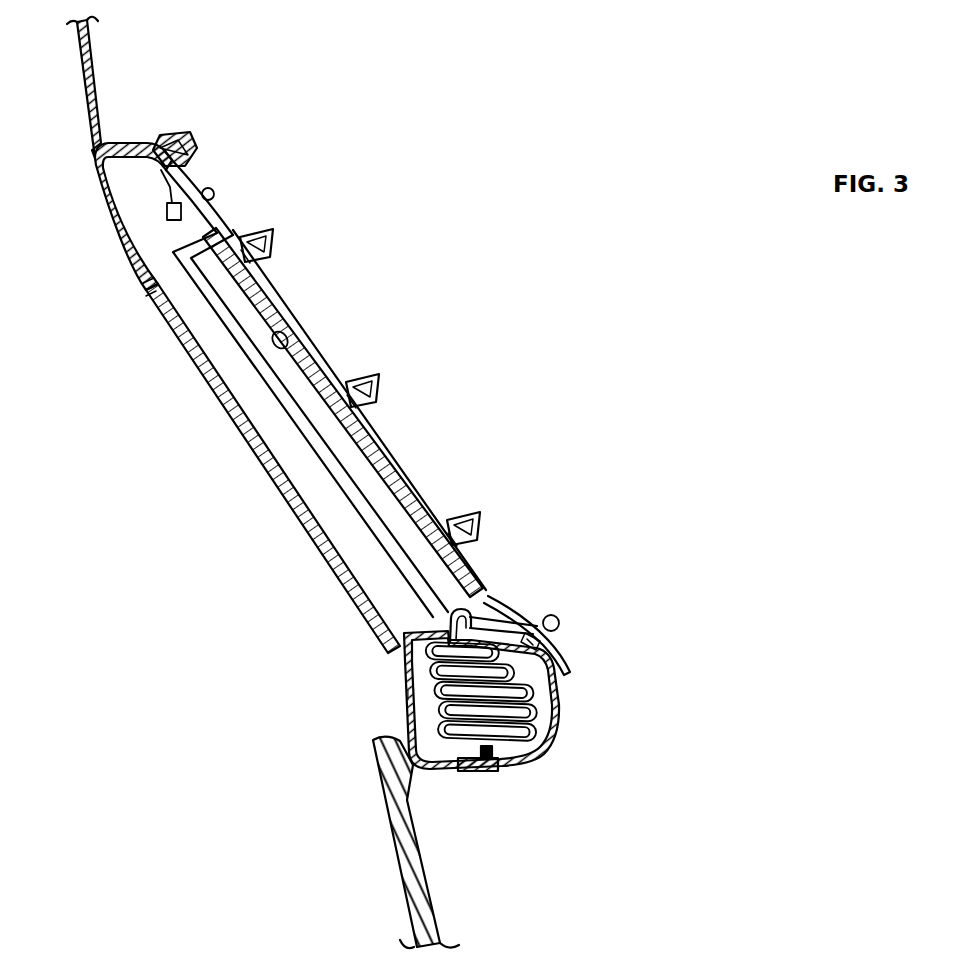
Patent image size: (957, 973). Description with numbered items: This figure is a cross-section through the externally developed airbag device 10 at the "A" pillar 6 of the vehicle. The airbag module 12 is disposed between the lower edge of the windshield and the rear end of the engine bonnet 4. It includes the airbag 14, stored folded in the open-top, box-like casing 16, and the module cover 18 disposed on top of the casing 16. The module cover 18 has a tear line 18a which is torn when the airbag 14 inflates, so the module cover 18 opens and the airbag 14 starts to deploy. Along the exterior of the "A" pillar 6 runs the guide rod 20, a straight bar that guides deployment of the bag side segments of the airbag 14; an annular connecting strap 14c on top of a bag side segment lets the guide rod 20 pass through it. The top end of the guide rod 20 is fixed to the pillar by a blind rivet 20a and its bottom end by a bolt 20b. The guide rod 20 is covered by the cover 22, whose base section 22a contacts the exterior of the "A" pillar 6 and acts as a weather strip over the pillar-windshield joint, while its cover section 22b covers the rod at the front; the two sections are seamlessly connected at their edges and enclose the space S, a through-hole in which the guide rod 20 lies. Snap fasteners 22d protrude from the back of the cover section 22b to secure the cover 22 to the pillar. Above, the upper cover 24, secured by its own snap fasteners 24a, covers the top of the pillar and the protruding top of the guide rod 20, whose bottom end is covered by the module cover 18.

The engine bonnet 4 is at (403, 888).
The "A" pillar 6 is at (397, 447).
The externally developed airbag device 10 is at (580, 558).
The airbag module 12 is at (465, 730).
The airbag 14 is at (419, 718).
The connecting strap 14c is at (420, 617).
The casing 16 is at (552, 733).
The module cover 18 is at (407, 713).
The tear line 18a is at (472, 771).
The guide rod 20 is at (335, 412).
The blind rivet 20a is at (150, 216).
The bolt 20b is at (565, 640).
The cover 22 is at (337, 409).
The base section 22a is at (288, 336).
The cover section 22b is at (191, 362).
The snap fastener 22d is at (241, 234).
The upper cover 24 is at (124, 272).
The snap fastener 24a is at (162, 134).
The space S is at (405, 520).